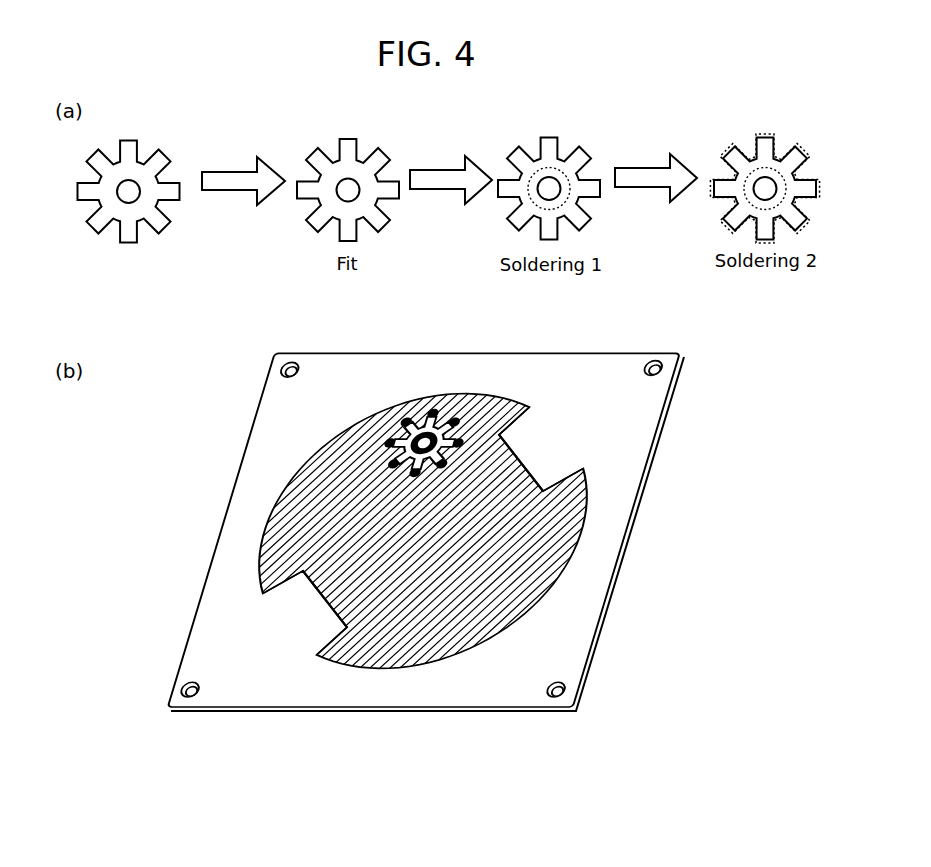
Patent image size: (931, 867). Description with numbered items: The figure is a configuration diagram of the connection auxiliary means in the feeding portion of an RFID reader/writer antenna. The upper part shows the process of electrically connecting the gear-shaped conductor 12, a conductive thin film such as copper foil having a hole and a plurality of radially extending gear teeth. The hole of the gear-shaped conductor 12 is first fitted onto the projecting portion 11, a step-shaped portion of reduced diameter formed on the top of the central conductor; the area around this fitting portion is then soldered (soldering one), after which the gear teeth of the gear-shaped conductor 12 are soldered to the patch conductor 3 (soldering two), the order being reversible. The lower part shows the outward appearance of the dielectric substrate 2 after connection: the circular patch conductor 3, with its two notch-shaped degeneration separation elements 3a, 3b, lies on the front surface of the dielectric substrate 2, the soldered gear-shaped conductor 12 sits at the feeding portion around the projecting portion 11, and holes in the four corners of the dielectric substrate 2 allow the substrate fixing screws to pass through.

The dielectric substrate 2 is at (572, 630).
The patch conductor 3 is at (317, 522).
The degeneration separation element 3a is at (521, 457).
The degeneration separation element 3b is at (320, 607).
The projecting portion 11 is at (351, 193).
The gear-shaped conductor 12 is at (145, 157).